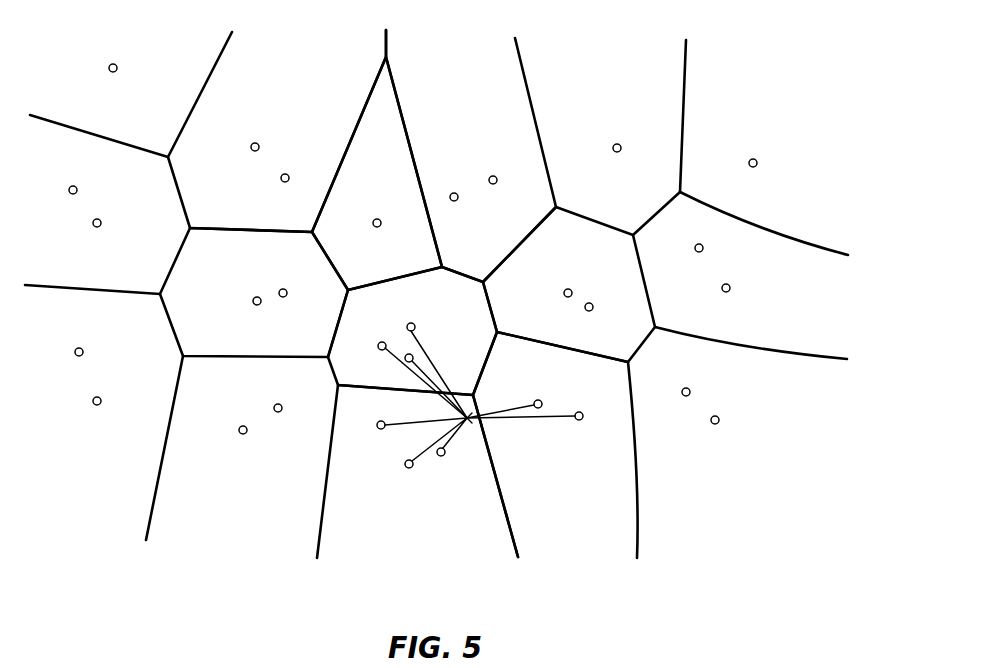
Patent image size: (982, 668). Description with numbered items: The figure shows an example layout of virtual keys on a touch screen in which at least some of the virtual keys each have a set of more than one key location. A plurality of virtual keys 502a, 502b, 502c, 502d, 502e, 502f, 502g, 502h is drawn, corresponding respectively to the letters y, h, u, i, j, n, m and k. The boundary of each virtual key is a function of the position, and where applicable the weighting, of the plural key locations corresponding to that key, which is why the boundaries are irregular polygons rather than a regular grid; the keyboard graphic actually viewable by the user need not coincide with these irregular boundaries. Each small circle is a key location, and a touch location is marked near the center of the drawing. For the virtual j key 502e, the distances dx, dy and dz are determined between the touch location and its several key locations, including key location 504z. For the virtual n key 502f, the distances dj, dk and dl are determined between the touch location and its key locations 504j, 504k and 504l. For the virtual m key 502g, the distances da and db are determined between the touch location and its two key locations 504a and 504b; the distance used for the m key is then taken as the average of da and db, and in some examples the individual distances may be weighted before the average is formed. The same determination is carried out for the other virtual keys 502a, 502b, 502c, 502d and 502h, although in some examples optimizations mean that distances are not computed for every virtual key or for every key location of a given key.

The virtual key 502a is at (277, 131).
The virtual key 502b is at (254, 292).
The virtual key 502c is at (377, 173).
The virtual key 502d is at (471, 156).
The virtual key 502e is at (412, 331).
The virtual key 502f is at (417, 494).
The virtual key 502g is at (555, 457).
The virtual key 502h is at (569, 284).
The key location 504z is at (378, 346).
The key location 504j is at (377, 426).
The key location 504k is at (406, 467).
The key location 504l is at (442, 456).
The key location 504a is at (541, 401).
The key location 504b is at (580, 420).
The distance dx is at (435, 362).
The distance dy is at (415, 374).
The distance dz is at (425, 382).
The distance dj is at (410, 428).
The distance dk is at (425, 452).
The distance dl is at (455, 432).
The distance da is at (508, 407).
The distance db is at (530, 423).